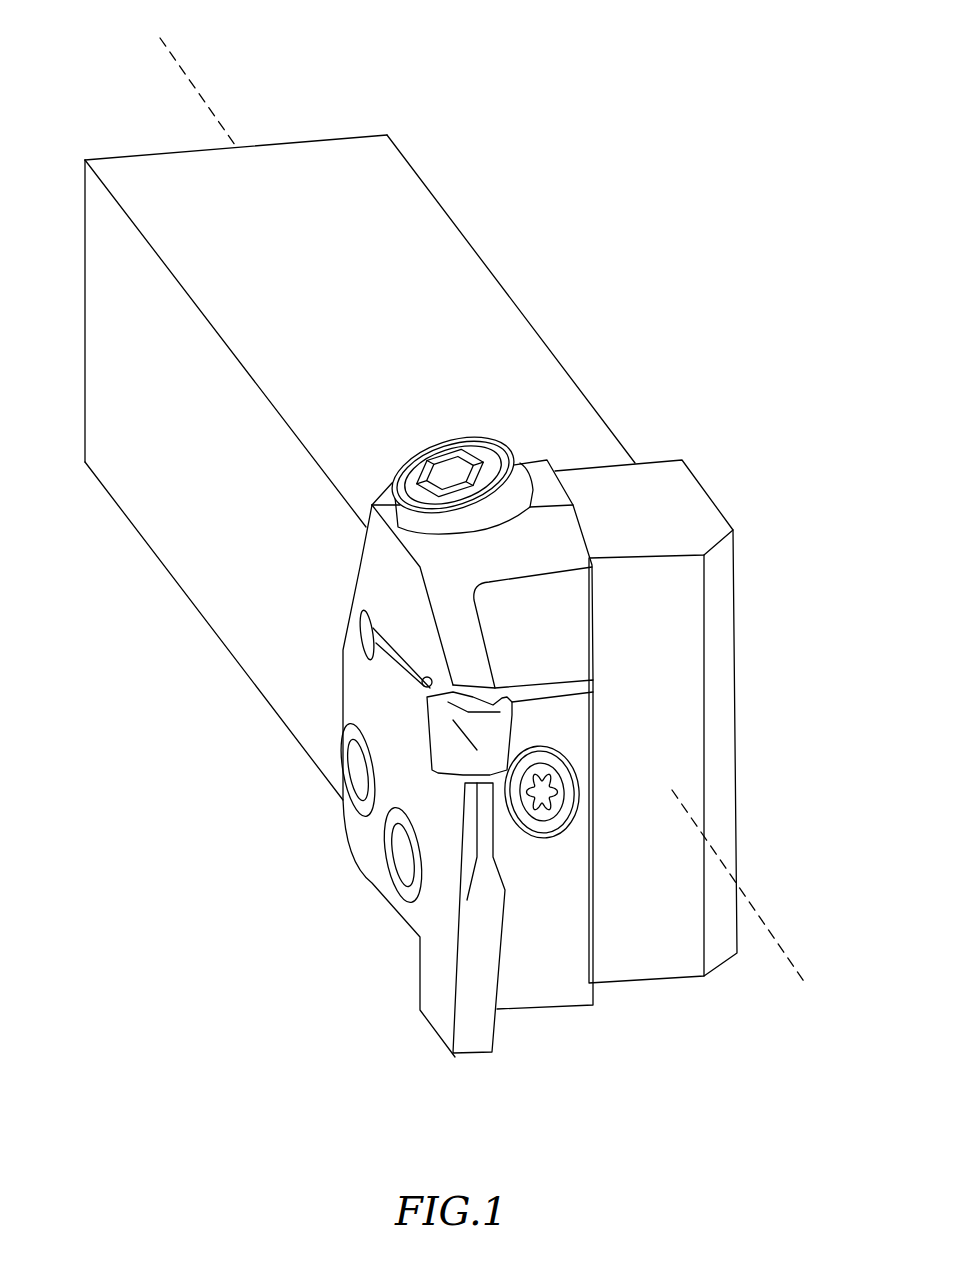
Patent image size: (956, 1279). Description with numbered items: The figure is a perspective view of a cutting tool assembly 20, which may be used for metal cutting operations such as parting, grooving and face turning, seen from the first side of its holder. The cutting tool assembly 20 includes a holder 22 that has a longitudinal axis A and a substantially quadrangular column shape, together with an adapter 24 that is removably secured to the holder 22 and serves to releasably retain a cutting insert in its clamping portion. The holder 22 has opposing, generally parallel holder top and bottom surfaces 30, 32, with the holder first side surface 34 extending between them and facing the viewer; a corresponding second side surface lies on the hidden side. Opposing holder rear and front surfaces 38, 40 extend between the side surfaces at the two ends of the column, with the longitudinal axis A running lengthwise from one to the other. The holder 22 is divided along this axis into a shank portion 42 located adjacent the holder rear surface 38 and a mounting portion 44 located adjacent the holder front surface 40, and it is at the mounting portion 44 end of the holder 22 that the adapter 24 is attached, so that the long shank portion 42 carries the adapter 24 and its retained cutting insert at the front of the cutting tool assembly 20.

The cutting tool assembly 20 is at (123, 68).
The holder 22 is at (481, 340).
The adapter 24 is at (372, 848).
The holder top surface 30 is at (428, 248).
The holder bottom surface 32 is at (235, 660).
The holder first side surface 34 is at (213, 578).
The holder rear surface 38 is at (357, 133).
The holder front surface 40 is at (670, 706).
The shank portion 42 is at (167, 512).
The mounting portion 44 is at (382, 947).
The longitudinal axis A is at (497, 522).